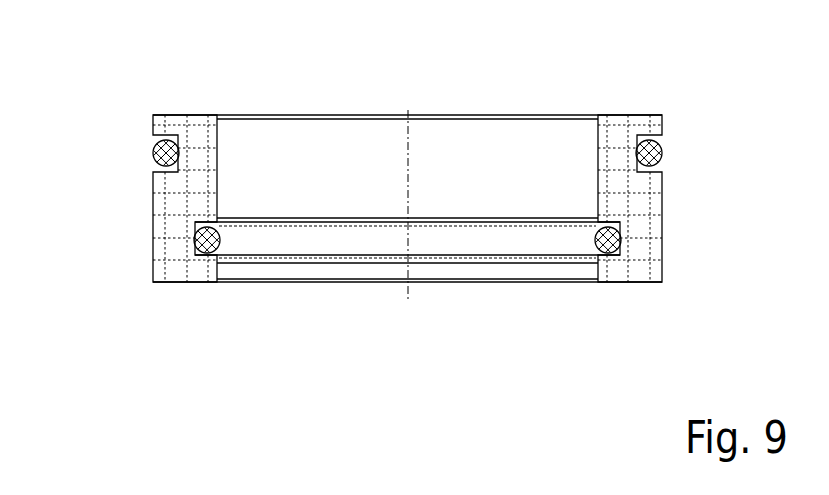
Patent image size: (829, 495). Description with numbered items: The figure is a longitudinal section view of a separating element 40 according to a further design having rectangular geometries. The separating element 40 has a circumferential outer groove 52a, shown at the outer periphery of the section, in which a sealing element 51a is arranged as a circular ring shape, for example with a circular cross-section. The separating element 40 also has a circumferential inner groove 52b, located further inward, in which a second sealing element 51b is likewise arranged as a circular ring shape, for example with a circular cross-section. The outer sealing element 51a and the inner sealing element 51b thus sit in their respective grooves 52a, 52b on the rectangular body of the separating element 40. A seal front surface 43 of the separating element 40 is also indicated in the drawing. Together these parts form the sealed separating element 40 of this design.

The separating element 40 is at (450, 205).
The seal front surface 43 is at (179, 115).
The sealing element 51a is at (157, 151).
The outer groove 52a is at (158, 168).
The sealing element 51b is at (218, 242).
The inner groove 52b is at (195, 226).